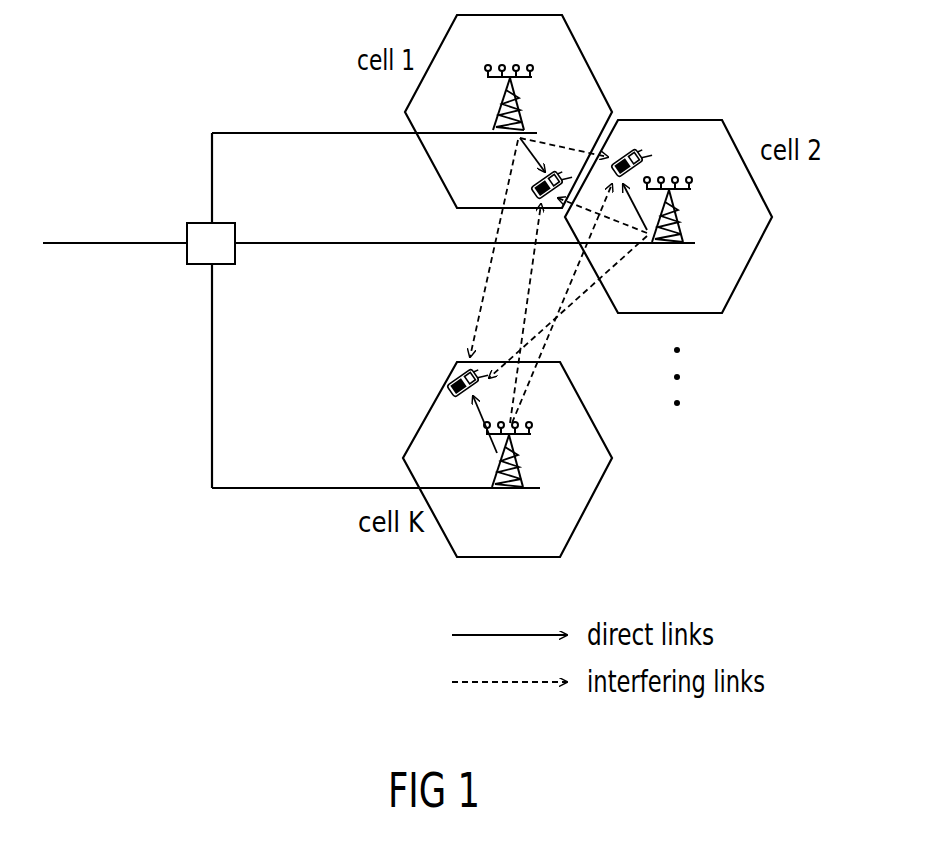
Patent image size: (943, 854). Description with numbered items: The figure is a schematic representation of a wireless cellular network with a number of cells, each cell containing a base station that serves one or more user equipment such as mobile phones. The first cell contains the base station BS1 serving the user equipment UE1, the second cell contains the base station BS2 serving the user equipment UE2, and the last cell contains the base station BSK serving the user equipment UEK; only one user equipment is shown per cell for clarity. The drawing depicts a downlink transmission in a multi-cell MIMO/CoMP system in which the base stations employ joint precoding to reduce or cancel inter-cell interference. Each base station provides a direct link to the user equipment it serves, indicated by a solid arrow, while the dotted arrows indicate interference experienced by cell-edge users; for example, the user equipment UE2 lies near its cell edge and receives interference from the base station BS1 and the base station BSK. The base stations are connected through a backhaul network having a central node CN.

The central node CN is at (211, 243).
The base station BS1 is at (531, 97).
The base station BS2 is at (694, 209).
The base station BSK is at (531, 454).
The user equipment UE1 is at (540, 178).
The user equipment UE2 is at (623, 152).
The user equipment UEK is at (456, 378).